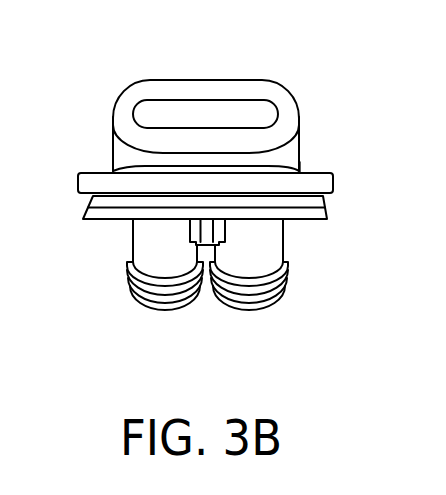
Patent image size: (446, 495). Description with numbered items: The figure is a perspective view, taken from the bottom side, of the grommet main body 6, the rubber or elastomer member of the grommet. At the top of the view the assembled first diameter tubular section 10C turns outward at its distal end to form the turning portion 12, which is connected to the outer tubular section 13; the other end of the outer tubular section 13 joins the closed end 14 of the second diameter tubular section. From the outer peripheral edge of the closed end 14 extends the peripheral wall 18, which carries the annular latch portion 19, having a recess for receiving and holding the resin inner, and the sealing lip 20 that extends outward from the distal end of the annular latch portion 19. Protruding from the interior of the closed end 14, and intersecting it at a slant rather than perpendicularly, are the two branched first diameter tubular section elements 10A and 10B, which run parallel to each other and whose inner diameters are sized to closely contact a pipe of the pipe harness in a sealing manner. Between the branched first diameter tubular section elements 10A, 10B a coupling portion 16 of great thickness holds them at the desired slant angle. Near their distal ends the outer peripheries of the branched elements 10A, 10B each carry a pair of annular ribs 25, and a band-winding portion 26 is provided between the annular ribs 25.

The grommet main body 6 is at (84, 113).
The branched first diameter tubular section element 10A is at (256, 242).
The branched first diameter tubular section element 10B is at (143, 240).
The assembled first diameter tubular section 10C is at (223, 112).
The turning portion 12 is at (285, 100).
The outer tubular section 13 is at (302, 140).
The closed end 14 is at (303, 168).
The coupling portion 16 is at (196, 230).
The peripheral wall 18 is at (250, 197).
The annular latch portion 19 is at (325, 183).
The sealing lip 20 is at (236, 209).
The annular ribs 25 is at (282, 290).
The band-winding portion 26 is at (238, 300).